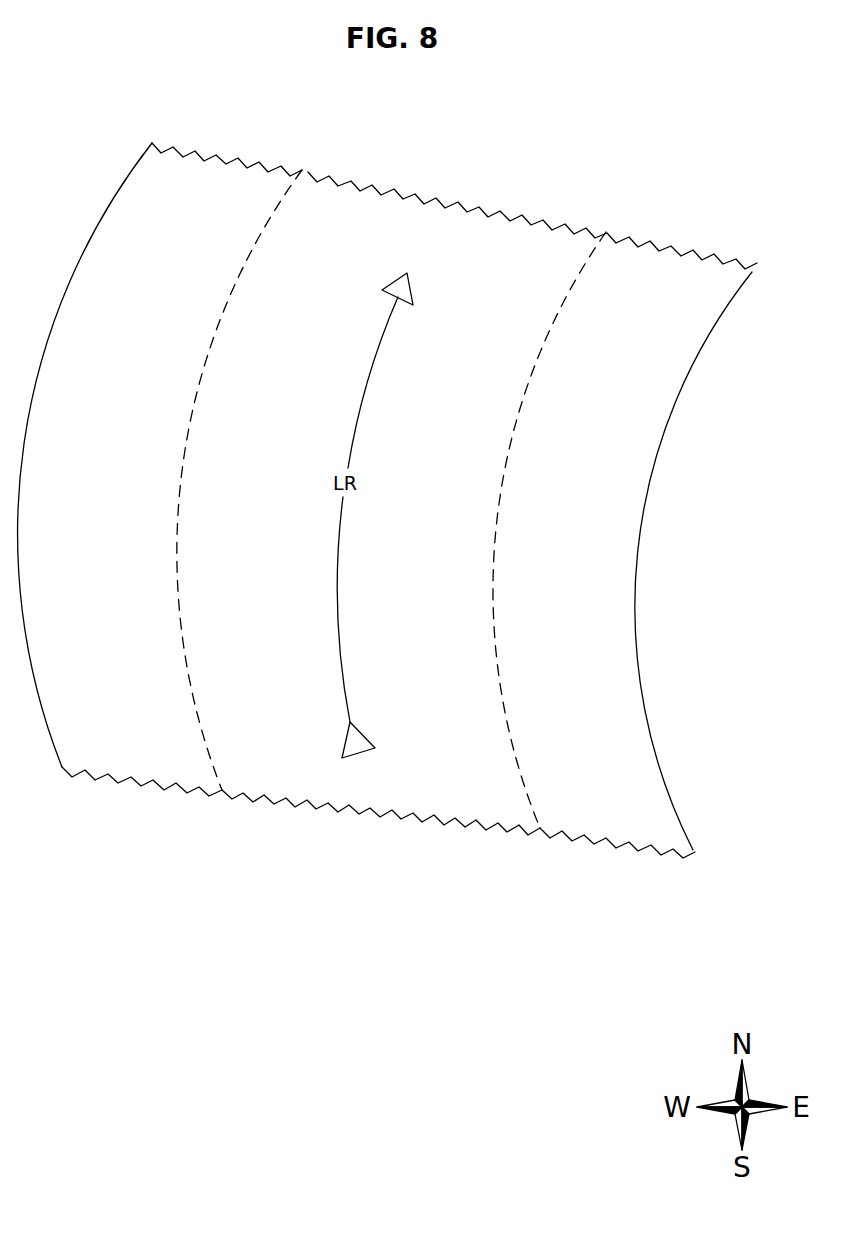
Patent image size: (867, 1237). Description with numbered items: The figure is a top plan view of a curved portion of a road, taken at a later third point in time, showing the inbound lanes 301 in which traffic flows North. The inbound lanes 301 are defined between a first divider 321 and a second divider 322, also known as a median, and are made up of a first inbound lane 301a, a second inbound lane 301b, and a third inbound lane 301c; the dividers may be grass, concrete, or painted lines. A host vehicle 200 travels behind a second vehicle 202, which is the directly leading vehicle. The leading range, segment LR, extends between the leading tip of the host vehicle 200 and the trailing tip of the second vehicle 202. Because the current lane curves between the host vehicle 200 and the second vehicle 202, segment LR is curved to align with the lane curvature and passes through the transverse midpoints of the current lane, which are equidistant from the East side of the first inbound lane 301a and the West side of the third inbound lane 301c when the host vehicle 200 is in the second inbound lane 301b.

The inbound lanes 301 is at (746, 145).
The first inbound lane 301a is at (185, 480).
The second inbound lane 301b is at (381, 802).
The third inbound lane 301c is at (549, 530).
The first divider 321 is at (643, 630).
The second divider 322 is at (98, 215).
The second vehicle 202 is at (400, 287).
The host vehicle 200 is at (358, 743).